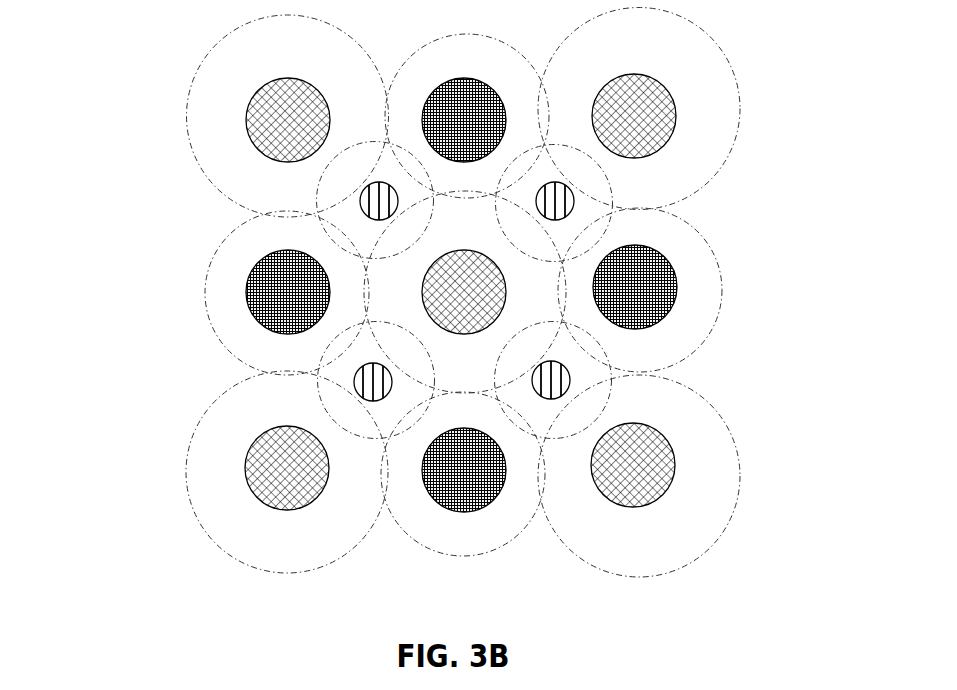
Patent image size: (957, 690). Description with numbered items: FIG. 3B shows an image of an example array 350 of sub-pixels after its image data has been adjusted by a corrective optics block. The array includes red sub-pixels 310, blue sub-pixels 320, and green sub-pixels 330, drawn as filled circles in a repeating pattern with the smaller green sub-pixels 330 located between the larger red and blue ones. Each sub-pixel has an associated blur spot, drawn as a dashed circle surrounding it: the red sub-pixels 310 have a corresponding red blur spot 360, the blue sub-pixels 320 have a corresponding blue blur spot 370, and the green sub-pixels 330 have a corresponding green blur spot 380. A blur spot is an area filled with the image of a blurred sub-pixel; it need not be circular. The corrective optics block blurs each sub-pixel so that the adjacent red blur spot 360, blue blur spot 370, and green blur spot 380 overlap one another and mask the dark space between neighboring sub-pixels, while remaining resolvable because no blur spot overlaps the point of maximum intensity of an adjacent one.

The sub-pixel arrangement with blur spots 350 is at (136, 46).
The red sub-pixels 310 is at (248, 106).
The blue sub-pixels 320 is at (247, 282).
The green sub-pixels 330 is at (355, 382).
The red blur spot 360 is at (655, 12).
The blue blur spot 370 is at (707, 236).
The green blur spot 380 is at (609, 395).